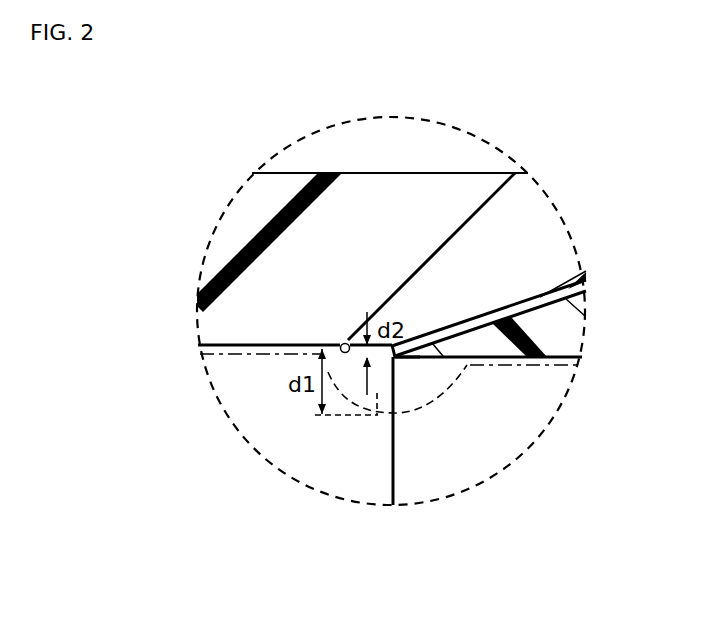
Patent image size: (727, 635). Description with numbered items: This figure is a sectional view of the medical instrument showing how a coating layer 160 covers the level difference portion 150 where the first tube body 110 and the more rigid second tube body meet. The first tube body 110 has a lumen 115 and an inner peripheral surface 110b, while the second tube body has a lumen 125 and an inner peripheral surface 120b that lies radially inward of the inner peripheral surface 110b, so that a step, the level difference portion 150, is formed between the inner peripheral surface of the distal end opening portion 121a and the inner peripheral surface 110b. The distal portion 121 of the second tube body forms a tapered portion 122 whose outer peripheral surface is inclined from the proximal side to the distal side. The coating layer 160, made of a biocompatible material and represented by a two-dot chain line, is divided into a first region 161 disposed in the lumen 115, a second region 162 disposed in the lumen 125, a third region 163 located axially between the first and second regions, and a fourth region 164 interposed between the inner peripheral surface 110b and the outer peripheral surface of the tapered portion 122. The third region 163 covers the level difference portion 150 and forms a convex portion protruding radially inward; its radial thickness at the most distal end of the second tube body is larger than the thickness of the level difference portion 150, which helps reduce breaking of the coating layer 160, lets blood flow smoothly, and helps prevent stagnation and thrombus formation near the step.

The first tube body 110 is at (285, 183).
The inner peripheral surface of the first tube body 110b is at (345, 343).
The lumen of the first tube body 115 is at (310, 467).
The inner peripheral surface of the second tube body 120b is at (403, 360).
The distal portion of the second tube body 121 is at (449, 330).
The distal end opening portion of the second tube body 121a is at (390, 477).
The tapered portion 122 is at (460, 348).
The lumen of the second tube body 125 is at (490, 462).
The level difference portion 150 is at (373, 350).
The coating layer 160 is at (268, 368).
The first region 161 is at (225, 363).
The second region 162 is at (535, 371).
The third region 163 is at (378, 392).
The fourth region 164 is at (603, 254).